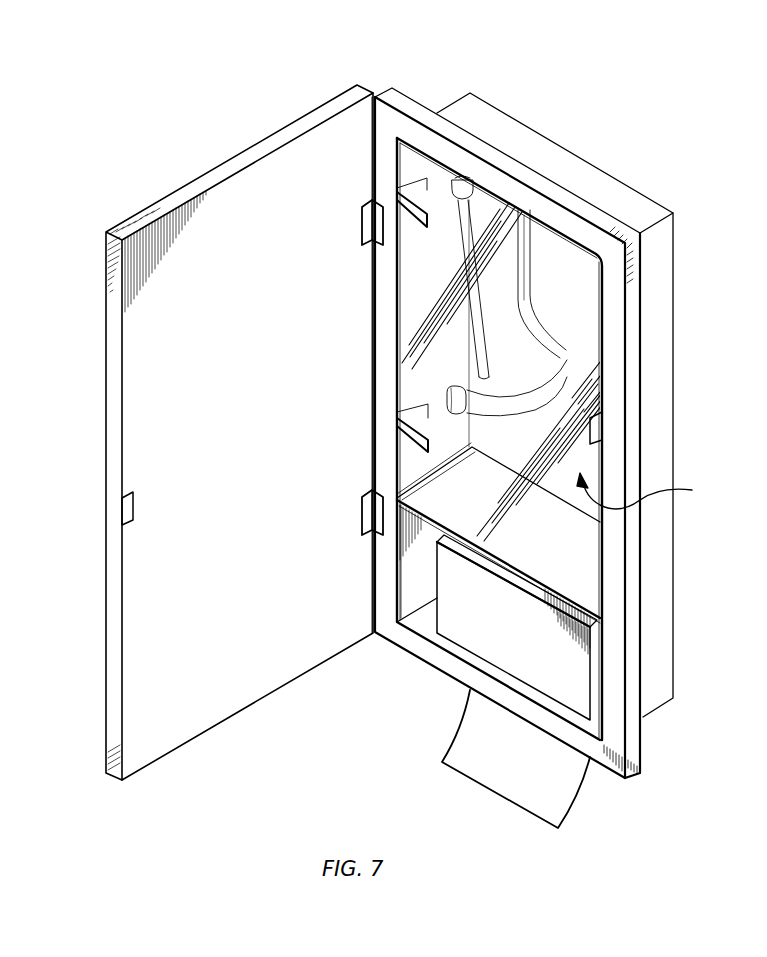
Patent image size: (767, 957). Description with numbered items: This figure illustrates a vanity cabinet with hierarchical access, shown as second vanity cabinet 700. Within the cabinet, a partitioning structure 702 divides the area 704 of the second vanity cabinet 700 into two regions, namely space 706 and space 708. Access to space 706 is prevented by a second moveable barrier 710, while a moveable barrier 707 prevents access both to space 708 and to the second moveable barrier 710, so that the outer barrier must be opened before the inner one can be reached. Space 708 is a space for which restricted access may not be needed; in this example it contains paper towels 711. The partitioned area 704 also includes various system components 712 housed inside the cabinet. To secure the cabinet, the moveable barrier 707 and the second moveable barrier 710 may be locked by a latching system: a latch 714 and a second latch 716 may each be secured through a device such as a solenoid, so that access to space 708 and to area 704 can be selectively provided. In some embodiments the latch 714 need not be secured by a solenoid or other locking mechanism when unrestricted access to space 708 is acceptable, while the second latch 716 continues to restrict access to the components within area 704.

The second vanity cabinet 700 is at (415, 102).
The partitioning structure 702 is at (443, 488).
The area 704 is at (570, 320).
The space 706 is at (655, 491).
The moveable barrier 707 is at (226, 661).
The space 708 is at (415, 568).
The second moveable barrier 710 is at (405, 275).
The paper towels 711 is at (468, 633).
The system components 712 is at (528, 255).
The latch 714 is at (133, 505).
The second latch 716 is at (600, 435).